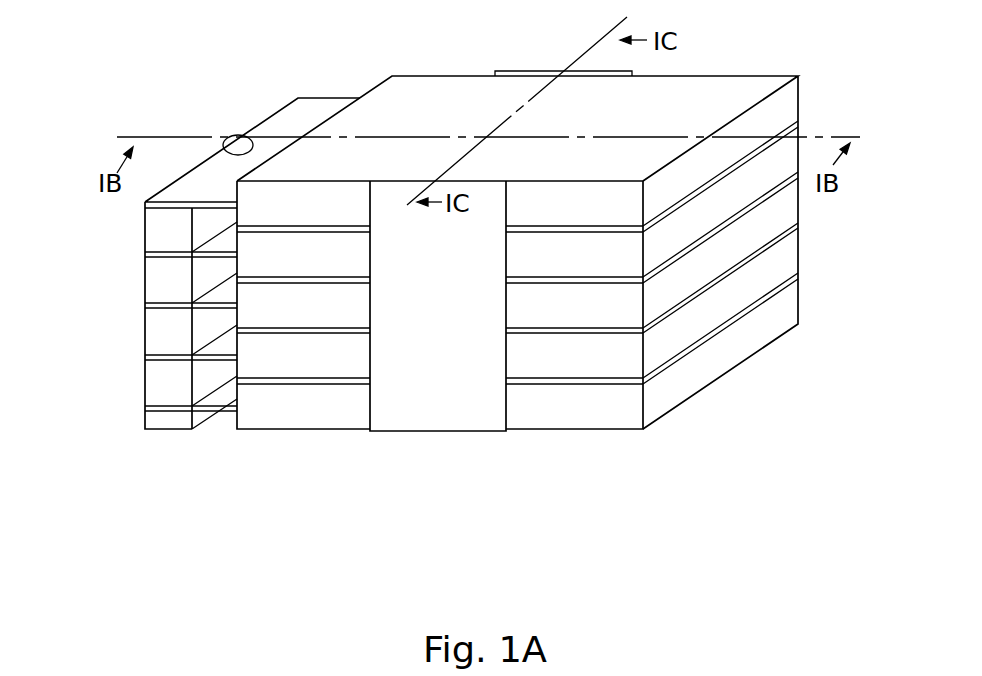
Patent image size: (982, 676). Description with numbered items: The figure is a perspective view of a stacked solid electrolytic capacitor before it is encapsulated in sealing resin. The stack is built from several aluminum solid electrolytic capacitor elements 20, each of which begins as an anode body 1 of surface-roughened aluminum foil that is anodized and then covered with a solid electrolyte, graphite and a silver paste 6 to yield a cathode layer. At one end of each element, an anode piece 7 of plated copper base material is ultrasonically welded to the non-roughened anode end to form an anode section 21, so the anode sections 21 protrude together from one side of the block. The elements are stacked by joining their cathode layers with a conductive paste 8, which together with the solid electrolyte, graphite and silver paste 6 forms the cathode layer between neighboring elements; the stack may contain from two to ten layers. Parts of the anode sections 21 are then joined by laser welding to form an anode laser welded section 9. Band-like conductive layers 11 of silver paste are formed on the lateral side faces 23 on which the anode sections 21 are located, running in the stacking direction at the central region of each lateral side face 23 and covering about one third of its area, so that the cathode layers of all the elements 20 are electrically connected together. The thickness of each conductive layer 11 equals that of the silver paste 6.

The anode body 1 is at (214, 412).
The silver paste 6 is at (577, 410).
The anode piece 7 is at (173, 417).
The conductive paste 8 is at (802, 275).
The anode laser welded section 9 is at (233, 142).
The conductive layer 11 is at (523, 70).
The solid electrolytic capacitor element 20 is at (778, 105).
The anode section 21 is at (145, 408).
The lateral side face 23 is at (314, 315).